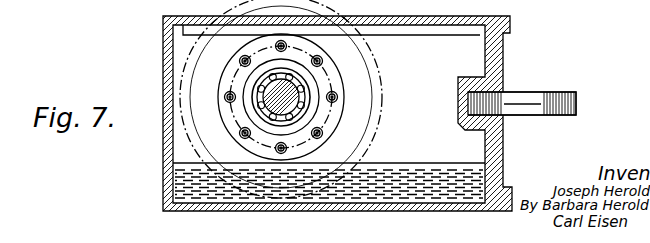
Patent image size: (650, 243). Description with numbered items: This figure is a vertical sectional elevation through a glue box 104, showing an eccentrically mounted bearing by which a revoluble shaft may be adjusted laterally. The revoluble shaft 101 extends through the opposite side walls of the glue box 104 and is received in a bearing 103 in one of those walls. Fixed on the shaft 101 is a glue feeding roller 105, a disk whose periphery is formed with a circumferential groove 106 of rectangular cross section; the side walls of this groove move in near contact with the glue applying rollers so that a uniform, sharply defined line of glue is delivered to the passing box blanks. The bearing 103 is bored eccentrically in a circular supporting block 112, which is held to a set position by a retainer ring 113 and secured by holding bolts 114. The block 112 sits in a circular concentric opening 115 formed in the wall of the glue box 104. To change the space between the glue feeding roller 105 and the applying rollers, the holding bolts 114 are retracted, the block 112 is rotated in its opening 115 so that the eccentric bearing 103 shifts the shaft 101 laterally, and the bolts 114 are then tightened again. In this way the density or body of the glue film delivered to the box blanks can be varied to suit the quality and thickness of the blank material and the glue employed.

The revoluble shaft 101 is at (300, 106).
The bearing 103 is at (296, 82).
The glue box 104 is at (379, 222).
The glue feeding roller 105 is at (384, 84).
The circumferential groove 106 is at (239, 62).
The circular supporting block 112 is at (303, 85).
The retainer ring 113 is at (229, 82).
The holding bolt 114 is at (243, 128).
The circular concentric opening 115 is at (306, 111).